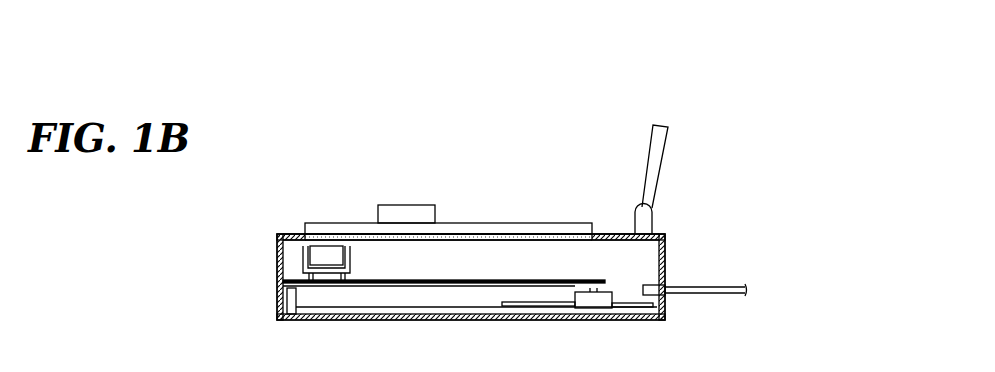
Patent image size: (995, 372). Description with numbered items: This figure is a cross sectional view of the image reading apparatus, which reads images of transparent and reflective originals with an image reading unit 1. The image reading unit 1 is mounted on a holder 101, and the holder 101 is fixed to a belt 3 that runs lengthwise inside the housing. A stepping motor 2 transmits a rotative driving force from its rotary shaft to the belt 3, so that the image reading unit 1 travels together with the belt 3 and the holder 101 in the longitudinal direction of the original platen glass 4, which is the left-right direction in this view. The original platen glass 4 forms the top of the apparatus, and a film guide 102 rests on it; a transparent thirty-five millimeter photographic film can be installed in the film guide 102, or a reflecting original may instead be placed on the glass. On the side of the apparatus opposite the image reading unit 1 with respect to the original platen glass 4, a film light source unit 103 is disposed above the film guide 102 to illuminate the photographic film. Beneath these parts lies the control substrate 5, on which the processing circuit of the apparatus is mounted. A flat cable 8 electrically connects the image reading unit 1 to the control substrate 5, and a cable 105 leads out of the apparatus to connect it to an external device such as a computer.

The image reading unit 1 is at (323, 253).
The stepping motor 2 is at (604, 298).
The belt 3 is at (452, 280).
The original platen glass 4 is at (562, 237).
The control substrate 5 is at (522, 300).
The flat cable 8 is at (373, 303).
The holder 101 is at (322, 256).
The film guide 102 is at (327, 228).
The film light source unit 103 is at (407, 207).
The cable 105 is at (707, 287).